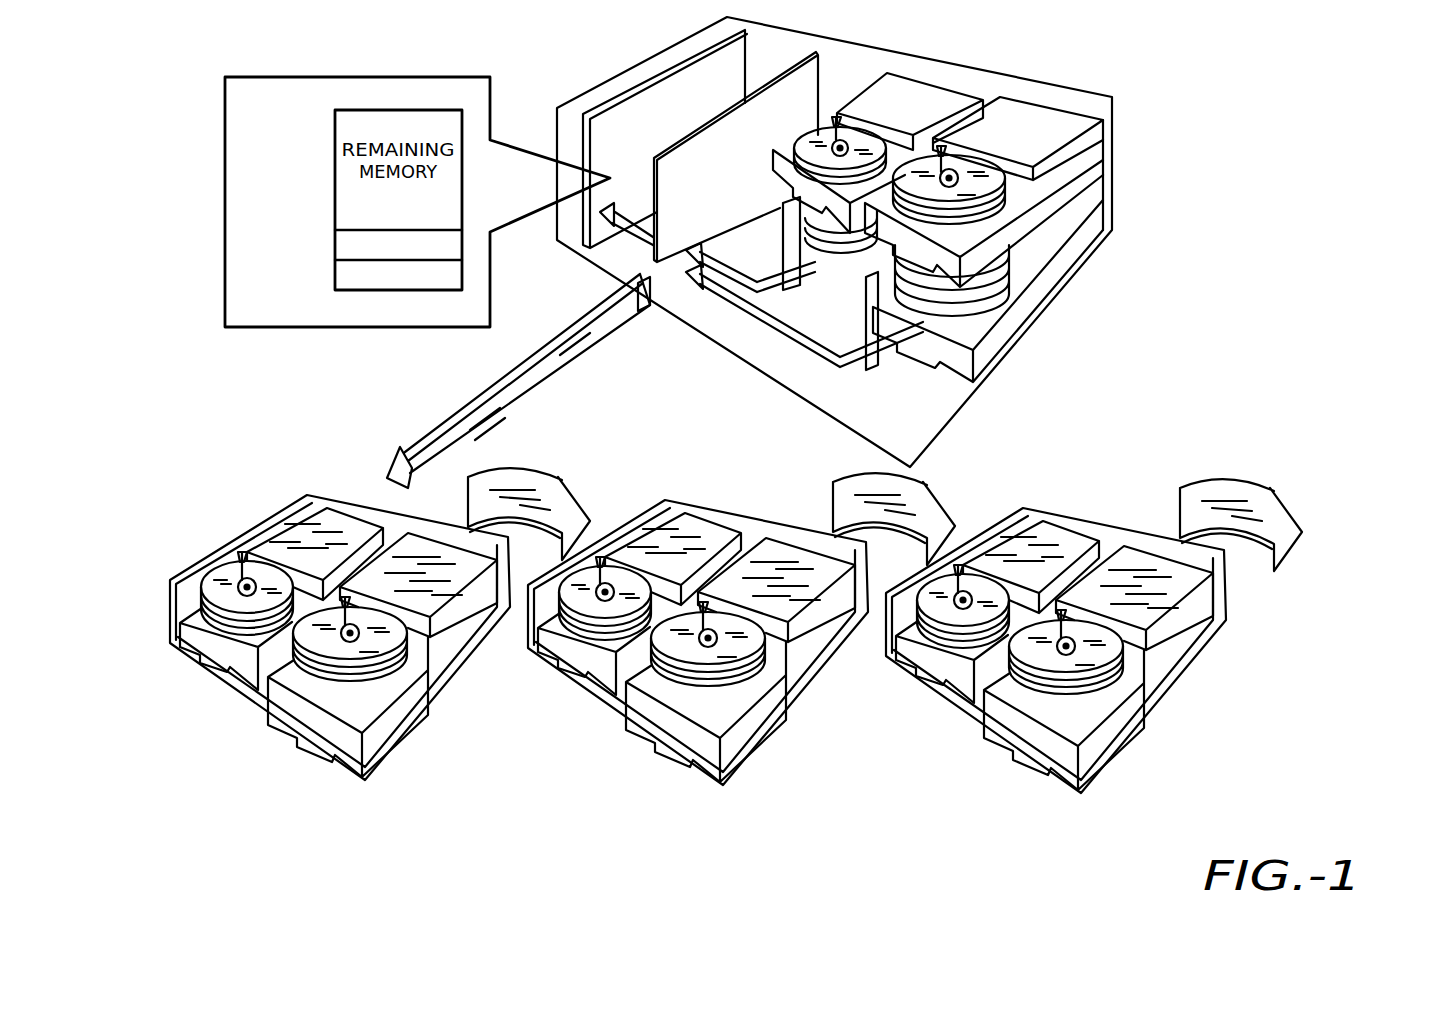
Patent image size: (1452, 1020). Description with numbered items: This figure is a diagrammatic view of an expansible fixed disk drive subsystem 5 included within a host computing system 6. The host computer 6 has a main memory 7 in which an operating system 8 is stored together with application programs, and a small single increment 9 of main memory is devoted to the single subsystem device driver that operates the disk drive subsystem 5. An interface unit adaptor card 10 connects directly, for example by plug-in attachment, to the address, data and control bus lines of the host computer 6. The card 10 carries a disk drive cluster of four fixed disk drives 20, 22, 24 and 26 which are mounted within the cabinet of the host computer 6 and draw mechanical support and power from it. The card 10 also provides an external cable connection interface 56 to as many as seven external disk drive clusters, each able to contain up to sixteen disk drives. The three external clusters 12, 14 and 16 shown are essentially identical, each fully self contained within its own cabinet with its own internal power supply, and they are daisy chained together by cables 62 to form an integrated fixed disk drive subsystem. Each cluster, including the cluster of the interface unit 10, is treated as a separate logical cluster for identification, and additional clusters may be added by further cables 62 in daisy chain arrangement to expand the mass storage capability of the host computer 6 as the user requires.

The fixed disk drive subsystem 5 is at (183, 737).
The host computing system 6 is at (932, 396).
The main memory 7 is at (695, 104).
The operating system 8 is at (296, 279).
The single increment of main memory 9 is at (338, 243).
The interface unit adaptor card 10 is at (706, 220).
The external disk drive cluster 12 is at (427, 707).
The external disk drive cluster 14 is at (698, 642).
The external disk drive cluster 16 is at (1056, 650).
The fixed disk drive 20 is at (895, 111).
The fixed disk drive 22 is at (1008, 139).
The fixed disk drive 24 is at (838, 287).
The fixed disk drive 26 is at (970, 227).
The external cable connection interface 56 is at (665, 285).
The cable 62 is at (505, 385).